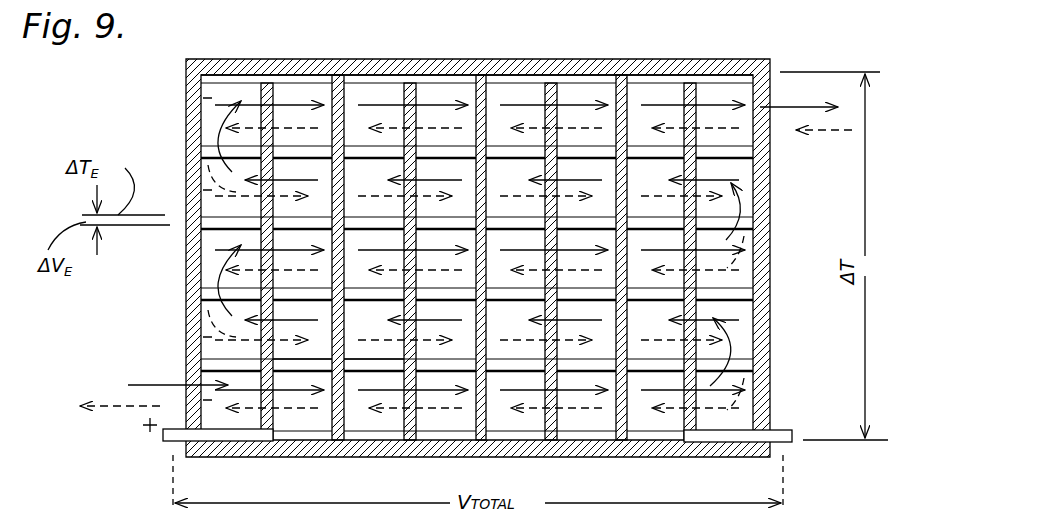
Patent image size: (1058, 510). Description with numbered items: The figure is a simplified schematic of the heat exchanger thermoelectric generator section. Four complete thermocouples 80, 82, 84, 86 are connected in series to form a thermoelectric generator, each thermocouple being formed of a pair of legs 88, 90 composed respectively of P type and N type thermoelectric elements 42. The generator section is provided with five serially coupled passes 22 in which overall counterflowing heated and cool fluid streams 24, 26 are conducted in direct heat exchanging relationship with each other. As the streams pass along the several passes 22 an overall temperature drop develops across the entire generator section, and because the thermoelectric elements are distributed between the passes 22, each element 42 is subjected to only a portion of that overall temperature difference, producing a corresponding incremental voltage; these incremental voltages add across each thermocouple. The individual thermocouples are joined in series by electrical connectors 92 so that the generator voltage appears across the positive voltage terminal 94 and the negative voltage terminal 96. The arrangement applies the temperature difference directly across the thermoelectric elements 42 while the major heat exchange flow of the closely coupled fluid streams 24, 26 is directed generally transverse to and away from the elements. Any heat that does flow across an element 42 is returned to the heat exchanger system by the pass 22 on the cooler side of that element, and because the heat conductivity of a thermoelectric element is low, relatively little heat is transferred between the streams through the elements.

The pass 22 is at (212, 98).
The heated fluid stream 24 is at (112, 509).
The cool fluid stream 26 is at (148, 378).
The thermoelectric element 42 is at (390, 362).
The thermocouple 80 is at (630, 463).
The thermocouple 82 is at (490, 463).
The thermocouple 84 is at (475, 463).
The thermocouple 86 is at (205, 463).
The leg 88 is at (394, 57).
The leg 90 is at (310, 56).
The electrical connector 92 is at (572, 80).
The positive voltage terminal 94 is at (166, 443).
The negative voltage terminal 96 is at (793, 444).